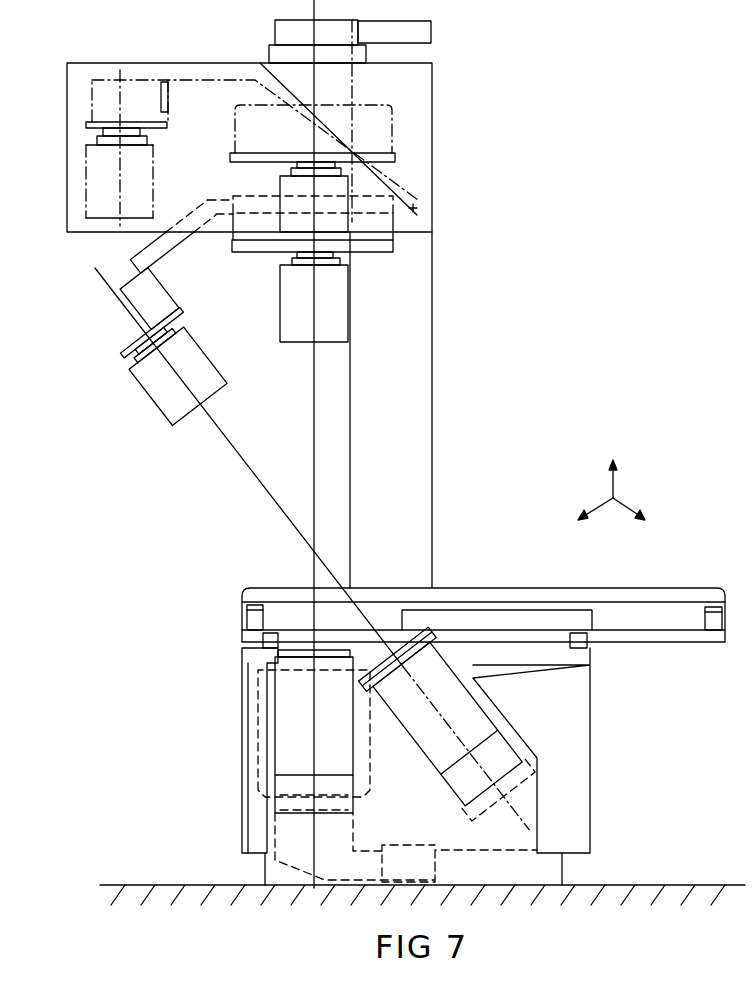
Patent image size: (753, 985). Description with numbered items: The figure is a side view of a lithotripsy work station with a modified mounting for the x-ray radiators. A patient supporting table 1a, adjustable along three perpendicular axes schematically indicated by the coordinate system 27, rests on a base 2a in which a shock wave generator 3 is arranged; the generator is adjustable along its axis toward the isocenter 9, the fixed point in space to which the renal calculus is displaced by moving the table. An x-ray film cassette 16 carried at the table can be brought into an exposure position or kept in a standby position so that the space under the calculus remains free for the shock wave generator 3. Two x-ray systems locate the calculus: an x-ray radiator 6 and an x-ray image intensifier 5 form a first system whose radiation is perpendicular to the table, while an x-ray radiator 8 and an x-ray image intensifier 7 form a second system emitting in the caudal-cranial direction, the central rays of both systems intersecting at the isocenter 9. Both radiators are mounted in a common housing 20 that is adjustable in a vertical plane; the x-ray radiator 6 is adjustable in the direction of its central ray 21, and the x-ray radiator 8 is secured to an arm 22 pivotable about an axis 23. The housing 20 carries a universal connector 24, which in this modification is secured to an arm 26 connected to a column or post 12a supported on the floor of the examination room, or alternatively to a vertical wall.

The patient supporting table 1a is at (516, 590).
The base 2a is at (582, 747).
The shock wave generator 3 is at (293, 727).
The x-ray image intensifier 5 is at (370, 767).
The x-ray radiator 6 is at (371, 249).
The x-ray image intensifier 7 is at (487, 717).
The x-ray radiator 8 is at (118, 330).
The isocenter 9 is at (317, 553).
The column or post 12a is at (432, 337).
The x-ray film cassette 16 is at (451, 620).
The common housing 20 is at (76, 163).
The central ray 21 is at (313, 414).
The arm 22 is at (165, 242).
The axis 23 is at (420, 208).
The universal connector 24 is at (292, 36).
The arm 26 is at (360, 39).
The coordinate system 27 is at (617, 490).